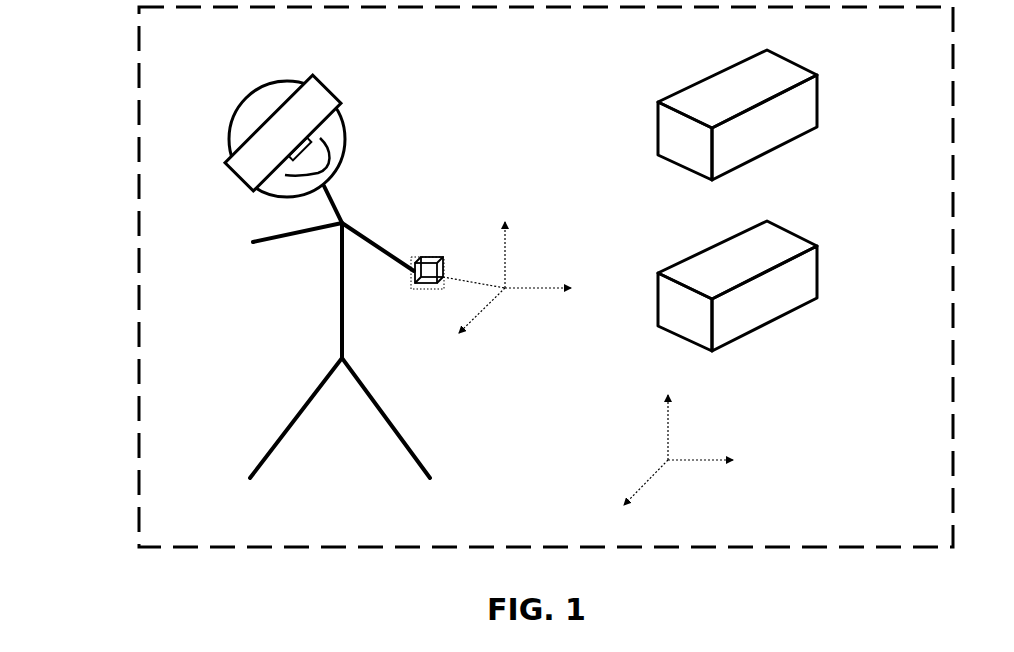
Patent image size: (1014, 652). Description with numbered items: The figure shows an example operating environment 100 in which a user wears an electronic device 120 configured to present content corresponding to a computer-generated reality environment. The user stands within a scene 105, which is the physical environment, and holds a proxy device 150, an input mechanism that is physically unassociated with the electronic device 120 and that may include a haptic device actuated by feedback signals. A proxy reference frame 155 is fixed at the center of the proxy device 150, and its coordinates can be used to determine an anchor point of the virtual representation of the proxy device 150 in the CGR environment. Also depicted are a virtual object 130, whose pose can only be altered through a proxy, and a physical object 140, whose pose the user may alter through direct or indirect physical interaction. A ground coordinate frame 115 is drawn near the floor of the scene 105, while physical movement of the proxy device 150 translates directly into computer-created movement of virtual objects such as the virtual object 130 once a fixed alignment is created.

The operating environment 100 is at (101, 28).
The scene 105 is at (546, 277).
The ground coordinate system 115 is at (675, 462).
The electronic device 120 is at (242, 181).
The virtual object 130 is at (737, 115).
The physical object 140 is at (737, 286).
The proxy device 150 is at (433, 253).
The proxy reference frame 155 is at (513, 295).